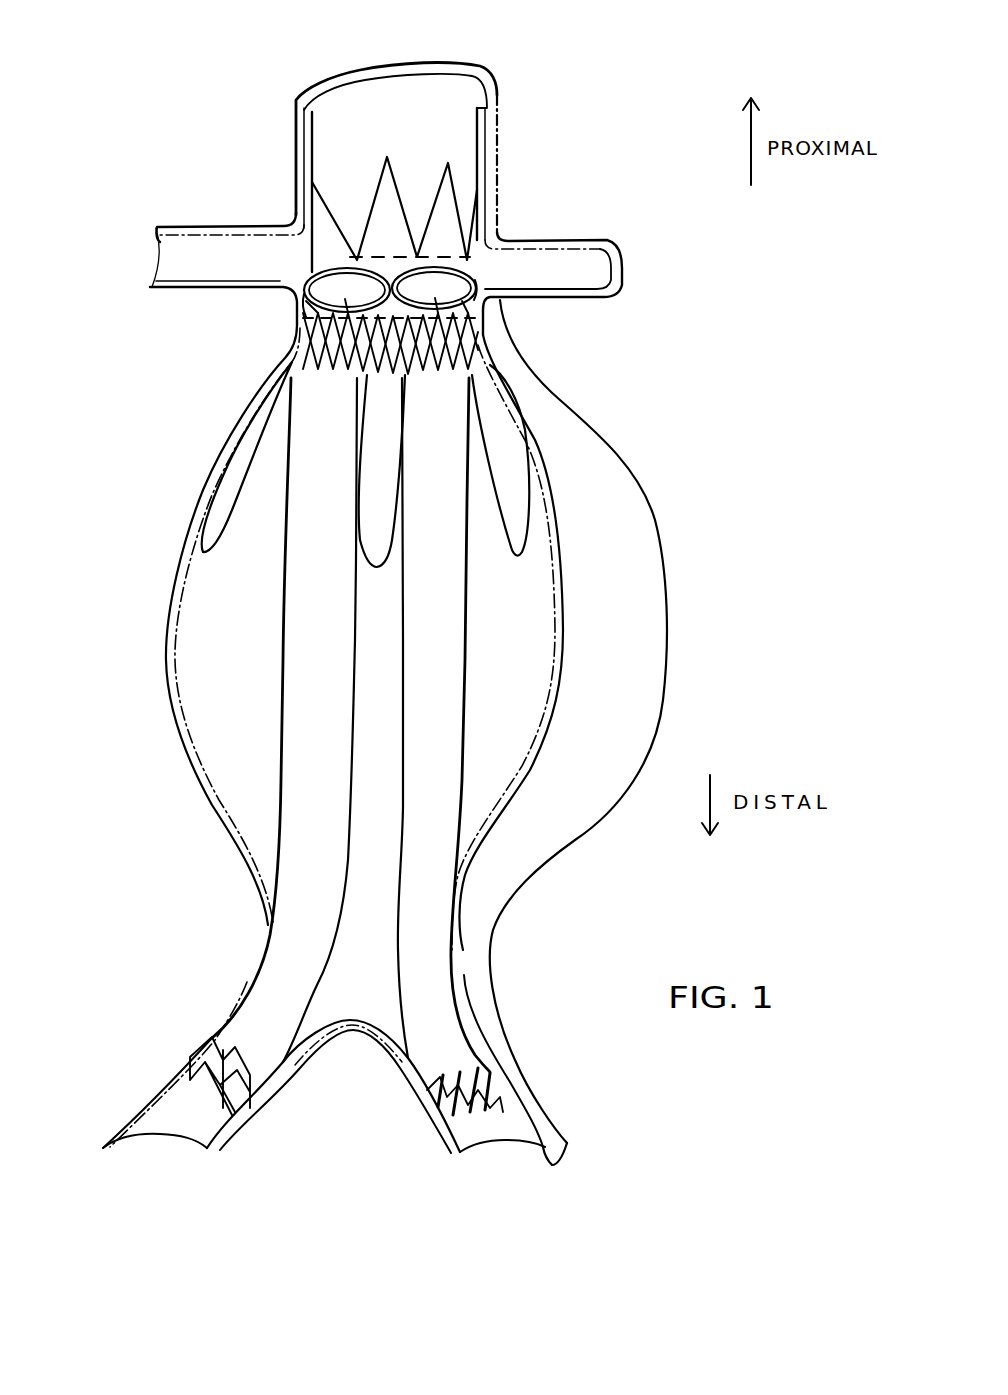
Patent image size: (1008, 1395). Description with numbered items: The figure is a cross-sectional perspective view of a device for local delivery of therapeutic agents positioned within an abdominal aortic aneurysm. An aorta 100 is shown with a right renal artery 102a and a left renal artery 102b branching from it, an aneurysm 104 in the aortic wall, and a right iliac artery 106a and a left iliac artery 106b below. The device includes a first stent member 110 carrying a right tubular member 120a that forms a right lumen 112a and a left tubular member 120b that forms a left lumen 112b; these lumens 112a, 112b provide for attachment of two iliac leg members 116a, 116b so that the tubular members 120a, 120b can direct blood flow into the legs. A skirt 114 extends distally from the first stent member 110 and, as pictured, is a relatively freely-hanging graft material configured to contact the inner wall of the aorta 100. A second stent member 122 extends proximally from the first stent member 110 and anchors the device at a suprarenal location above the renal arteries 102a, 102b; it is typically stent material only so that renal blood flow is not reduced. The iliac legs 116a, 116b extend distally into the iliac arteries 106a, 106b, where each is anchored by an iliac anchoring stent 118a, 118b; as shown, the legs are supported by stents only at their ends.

The aorta 100 is at (437, 78).
The right renal artery 102a is at (172, 264).
The left renal artery 102b is at (612, 278).
The aneurysm 104 is at (638, 534).
The right iliac artery 106a is at (184, 1138).
The left iliac artery 106b is at (510, 1145).
The first stent member 110 is at (465, 323).
The right lumen 112a is at (324, 296).
The left lumen 112b is at (456, 295).
The skirt 114 is at (496, 455).
The iliac leg member 116a is at (269, 673).
The iliac leg member 116b is at (481, 663).
The iliac anchoring stent 118a is at (218, 1049).
The iliac anchoring stent 118b is at (494, 1090).
The right tubular member 120a is at (307, 311).
The left tubular member 120b is at (478, 277).
The second stent member 122 is at (463, 178).